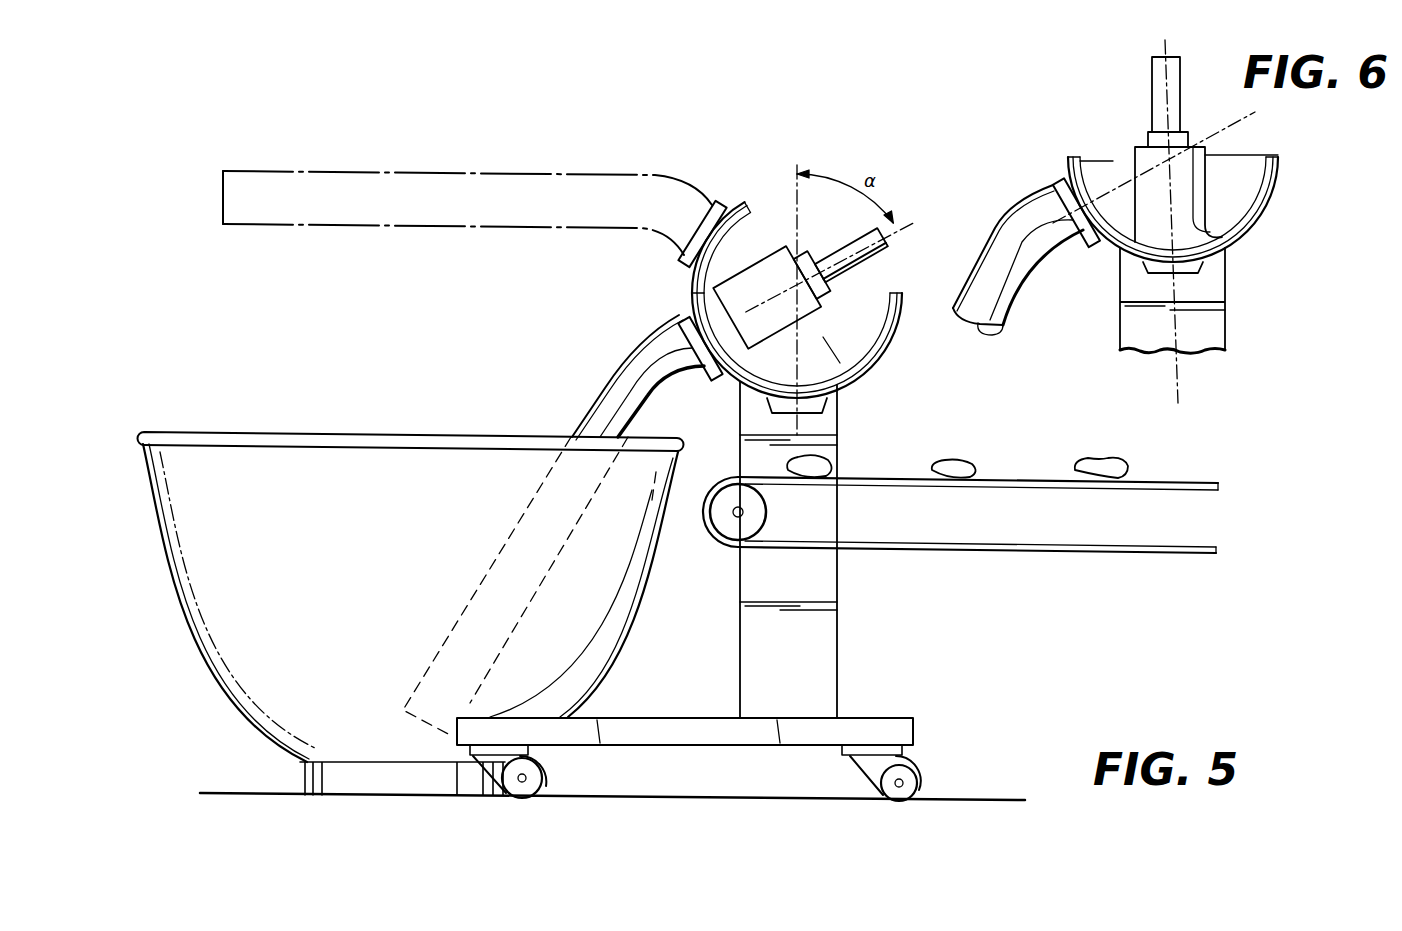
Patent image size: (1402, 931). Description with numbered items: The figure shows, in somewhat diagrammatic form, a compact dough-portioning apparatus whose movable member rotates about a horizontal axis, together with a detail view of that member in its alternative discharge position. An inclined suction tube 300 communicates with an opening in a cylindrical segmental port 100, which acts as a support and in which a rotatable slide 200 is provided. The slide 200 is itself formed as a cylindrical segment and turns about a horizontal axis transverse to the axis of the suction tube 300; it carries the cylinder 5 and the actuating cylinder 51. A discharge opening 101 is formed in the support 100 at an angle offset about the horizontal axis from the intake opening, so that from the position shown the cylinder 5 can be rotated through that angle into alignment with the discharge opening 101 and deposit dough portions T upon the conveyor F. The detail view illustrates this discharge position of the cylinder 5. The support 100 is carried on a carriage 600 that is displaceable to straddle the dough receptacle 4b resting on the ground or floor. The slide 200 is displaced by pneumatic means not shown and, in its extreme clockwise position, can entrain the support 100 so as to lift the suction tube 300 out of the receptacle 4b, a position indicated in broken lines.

In FIG. 5, the dough receptacle 4b is at (196, 642).
In FIG. 5, the suction tube 300 is at (637, 372).
In FIG. 6, the suction tube 300 is at (1018, 273).
In FIG. 5, the rotatable slide 200 is at (766, 236).
In FIG. 6, the rotatable slide 200 is at (1107, 140).
In FIG. 5, the cylindrical segmental port 100 is at (880, 358).
In FIG. 6, the cylindrical segmental port 100 is at (1068, 163).
In FIG. 5, the discharge opening 101 is at (810, 403).
In FIG. 6, the discharge opening 101 is at (1172, 300).
In FIG. 5, the cylinder 5 is at (763, 282).
In FIG. 6, the cylinder 5 is at (1183, 205).
In FIG. 5, the actuating cylinder 51 is at (842, 250).
In FIG. 5, the carriage 600 is at (850, 666).
In FIG. 5, the conveyor F is at (1123, 543).
In FIG. 5, the dough portions T is at (962, 469).